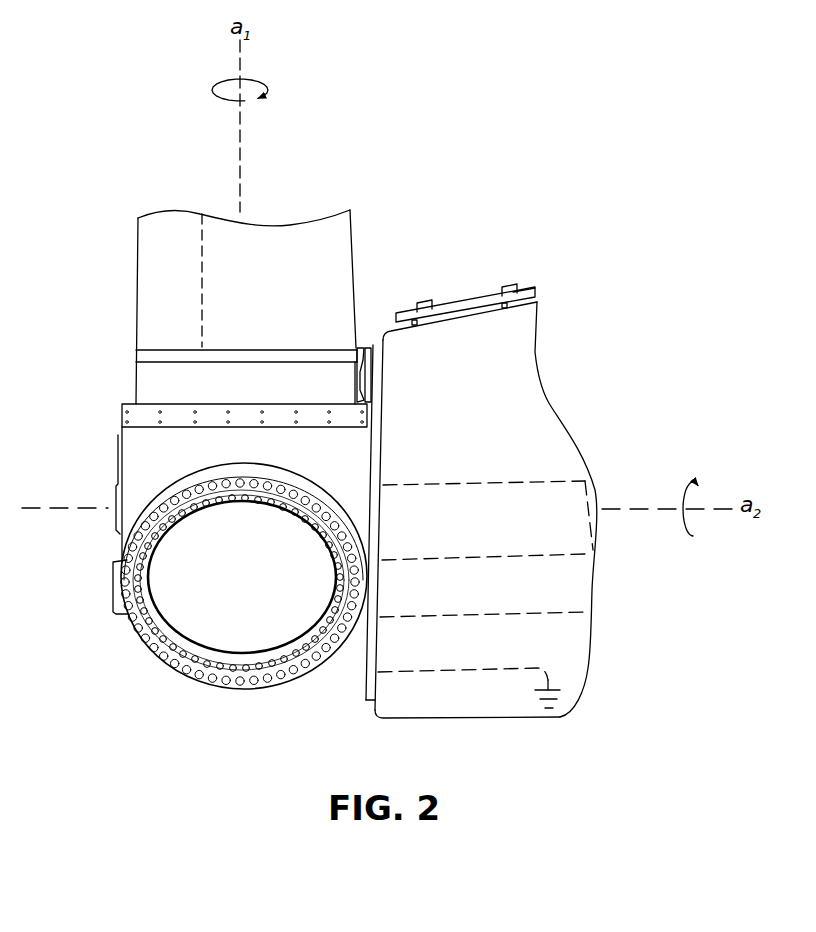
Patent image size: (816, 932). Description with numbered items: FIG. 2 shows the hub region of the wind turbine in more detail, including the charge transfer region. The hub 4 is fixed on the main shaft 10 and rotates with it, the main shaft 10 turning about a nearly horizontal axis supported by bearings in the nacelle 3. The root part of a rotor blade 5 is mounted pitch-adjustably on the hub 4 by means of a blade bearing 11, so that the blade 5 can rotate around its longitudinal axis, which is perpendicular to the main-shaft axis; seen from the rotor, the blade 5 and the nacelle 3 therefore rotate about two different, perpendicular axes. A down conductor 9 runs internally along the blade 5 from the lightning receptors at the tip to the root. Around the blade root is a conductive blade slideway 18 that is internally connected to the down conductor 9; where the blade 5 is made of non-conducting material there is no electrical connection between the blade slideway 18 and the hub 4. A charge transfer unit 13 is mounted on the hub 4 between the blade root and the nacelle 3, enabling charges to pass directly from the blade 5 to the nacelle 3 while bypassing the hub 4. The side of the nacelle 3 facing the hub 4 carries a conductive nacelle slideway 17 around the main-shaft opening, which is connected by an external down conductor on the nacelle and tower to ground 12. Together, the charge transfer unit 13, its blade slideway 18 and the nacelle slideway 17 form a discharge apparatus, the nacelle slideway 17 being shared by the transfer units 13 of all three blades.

The nacelle 3 is at (496, 516).
The hub 4 is at (233, 599).
The rotor blade 5 is at (181, 207).
The down conductor 9 is at (200, 315).
The main shaft 10 is at (572, 541).
The blade bearing 11 is at (160, 652).
The ground 12 is at (552, 671).
The charge transfer unit 13 is at (369, 337).
The nacelle slideway 17 is at (356, 710).
The blade slideway 18 is at (160, 349).